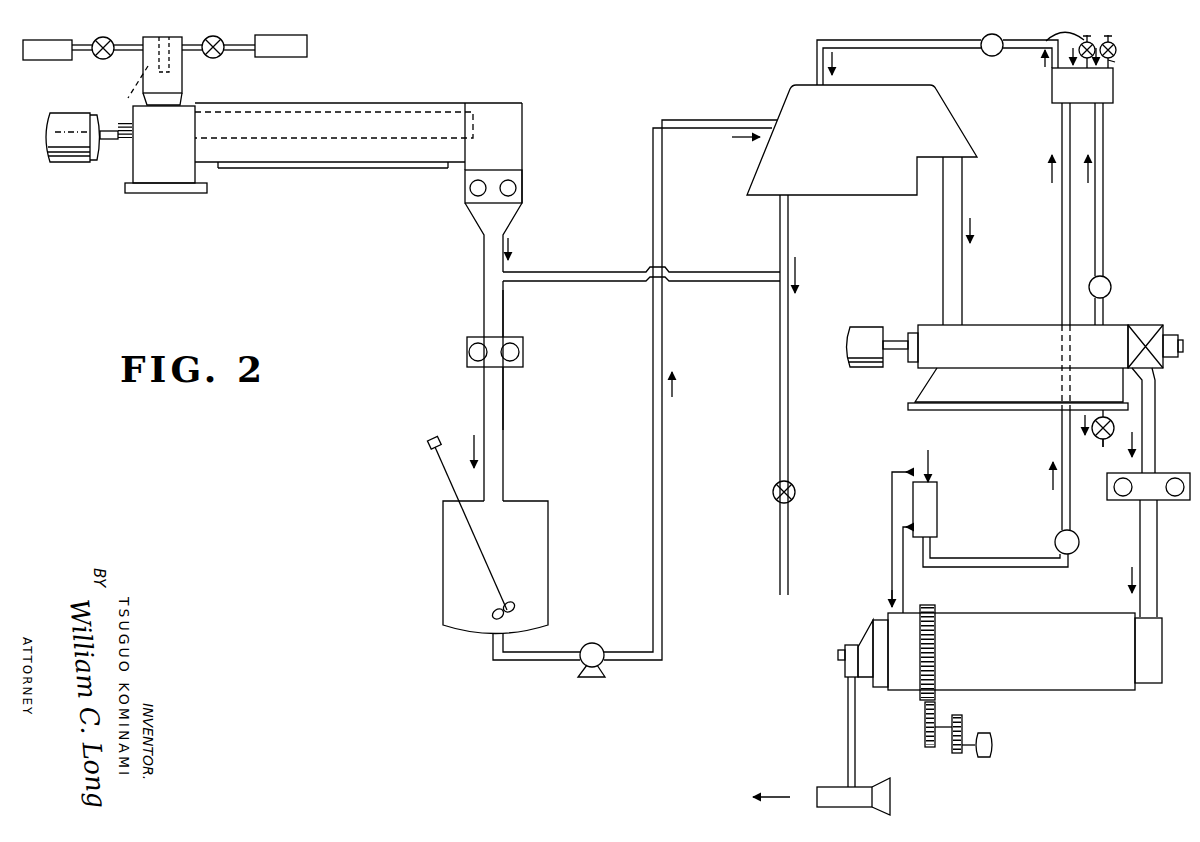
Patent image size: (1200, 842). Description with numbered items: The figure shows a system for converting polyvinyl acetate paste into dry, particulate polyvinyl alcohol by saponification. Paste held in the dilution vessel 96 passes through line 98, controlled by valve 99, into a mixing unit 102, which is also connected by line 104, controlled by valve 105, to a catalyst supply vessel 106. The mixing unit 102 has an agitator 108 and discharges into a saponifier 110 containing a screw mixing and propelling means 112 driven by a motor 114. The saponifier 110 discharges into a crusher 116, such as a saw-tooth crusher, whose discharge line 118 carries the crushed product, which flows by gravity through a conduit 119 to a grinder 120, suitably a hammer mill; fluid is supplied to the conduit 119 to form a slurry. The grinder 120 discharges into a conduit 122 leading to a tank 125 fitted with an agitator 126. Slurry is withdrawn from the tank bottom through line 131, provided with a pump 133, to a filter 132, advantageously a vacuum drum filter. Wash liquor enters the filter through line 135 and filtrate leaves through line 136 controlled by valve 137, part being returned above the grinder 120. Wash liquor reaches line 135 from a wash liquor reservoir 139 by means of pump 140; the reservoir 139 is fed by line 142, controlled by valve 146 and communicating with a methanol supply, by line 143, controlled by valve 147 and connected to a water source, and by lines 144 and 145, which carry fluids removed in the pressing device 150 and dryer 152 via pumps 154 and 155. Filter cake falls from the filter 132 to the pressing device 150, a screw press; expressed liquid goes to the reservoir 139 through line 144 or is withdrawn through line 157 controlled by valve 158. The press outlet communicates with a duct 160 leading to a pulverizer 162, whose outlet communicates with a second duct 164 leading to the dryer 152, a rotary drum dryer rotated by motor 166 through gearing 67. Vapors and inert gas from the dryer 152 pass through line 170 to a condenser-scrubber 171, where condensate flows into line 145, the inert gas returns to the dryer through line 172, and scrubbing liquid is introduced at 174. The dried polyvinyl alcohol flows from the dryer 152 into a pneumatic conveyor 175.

The gear train 67 is at (920, 712).
The dilution vessel 96 is at (307, 45).
The line 98 is at (240, 52).
The valve 99 is at (215, 58).
The mixing unit 102 is at (178, 80).
The line 104 is at (122, 55).
The valve 105 is at (93, 50).
The catalyst supply vessel 106 is at (47, 50).
The agitator 108 is at (122, 88).
The saponifier 110 is at (300, 103).
The screw mixing and propelling means 112 is at (397, 103).
The motor 114 is at (78, 148).
The crusher 116 is at (522, 185).
The conduit 118 is at (585, 272).
The conduit 119 is at (500, 326).
The grinder 120 is at (523, 355).
The conduit 122 is at (499, 405).
The tank 125 is at (537, 579).
The agitator 126 is at (470, 533).
The line 131 is at (527, 658).
The filter 132 is at (857, 93).
The pump 133 is at (592, 667).
The line 135 is at (818, 60).
The line 136 is at (788, 395).
The valve 137 is at (793, 483).
The wash liquor reservoir 139 is at (1105, 95).
The pump 140 is at (985, 55).
The line 142 is at (1092, 36).
The line 143 is at (1113, 37).
The line 144 is at (1103, 190).
The line 145 is at (1062, 197).
The valve 146 is at (1043, 50).
The valve 147 is at (1116, 52).
The pressing device 150 is at (980, 320).
The dryer 152 is at (975, 623).
The pump 154 is at (1108, 278).
The pump 155 is at (1055, 536).
The line 157 is at (1098, 440).
The valve 158 is at (1114, 433).
The duct 160 is at (1150, 432).
The pulverizer 162 is at (1127, 500).
The second duct 164 is at (1140, 552).
The motor 166 is at (997, 776).
The line 170 is at (903, 597).
The condenser-scrubber 171 is at (930, 494).
The line 172 is at (887, 570).
The scrubbing liquid inlet 174 is at (932, 457).
The pneumatic conveyor 175 is at (835, 800).